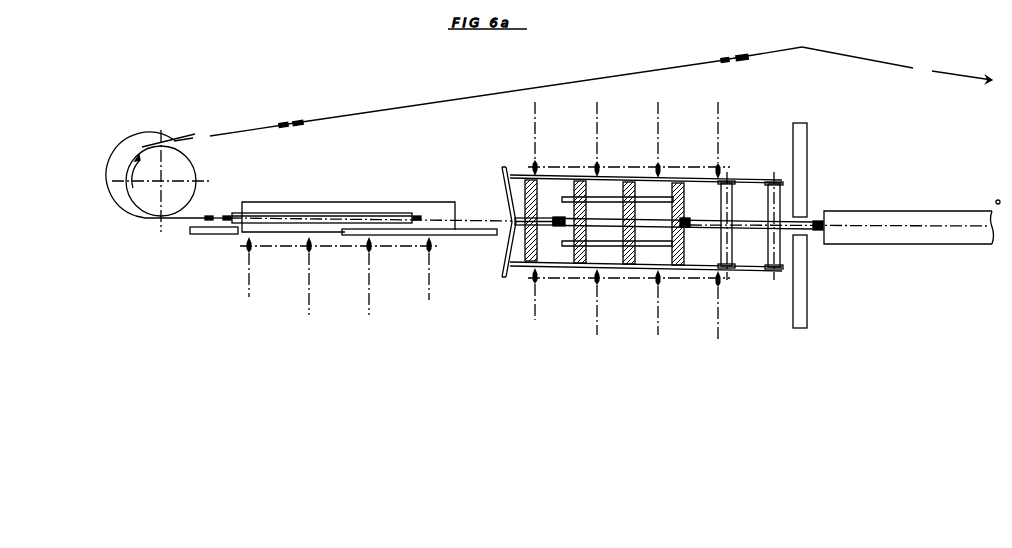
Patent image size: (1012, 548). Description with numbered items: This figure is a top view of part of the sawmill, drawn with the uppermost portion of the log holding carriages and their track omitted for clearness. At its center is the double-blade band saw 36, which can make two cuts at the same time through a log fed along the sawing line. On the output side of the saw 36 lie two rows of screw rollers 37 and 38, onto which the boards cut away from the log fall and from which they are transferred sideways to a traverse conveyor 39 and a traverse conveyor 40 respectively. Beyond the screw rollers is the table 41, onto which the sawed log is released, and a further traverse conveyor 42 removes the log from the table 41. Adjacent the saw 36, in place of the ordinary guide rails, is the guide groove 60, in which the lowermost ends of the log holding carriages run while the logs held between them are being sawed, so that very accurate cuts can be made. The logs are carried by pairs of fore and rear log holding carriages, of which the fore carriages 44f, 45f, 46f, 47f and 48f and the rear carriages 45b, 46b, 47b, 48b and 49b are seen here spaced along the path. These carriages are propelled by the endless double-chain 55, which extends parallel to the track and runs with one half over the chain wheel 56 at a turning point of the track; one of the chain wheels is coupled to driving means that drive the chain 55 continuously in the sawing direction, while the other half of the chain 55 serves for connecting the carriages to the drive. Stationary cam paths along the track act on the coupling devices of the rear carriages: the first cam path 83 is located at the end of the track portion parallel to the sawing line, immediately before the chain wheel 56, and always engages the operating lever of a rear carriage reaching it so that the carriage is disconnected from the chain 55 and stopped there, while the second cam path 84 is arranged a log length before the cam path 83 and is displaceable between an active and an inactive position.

The double-blade band saw 36 is at (803, 240).
The screw rollers 37 is at (587, 262).
The screw rollers 38 is at (587, 197).
The traverse conveyor 39 is at (718, 290).
The traverse conveyor 40 is at (720, 137).
The table 41 is at (441, 212).
The traverse conveyor 42 is at (430, 266).
The fore log holding carriage 44f is at (815, 222).
The rear log holding carriage 45b is at (685, 220).
The fore log holding carriage 45f is at (563, 217).
The rear log holding carriage 46b is at (417, 214).
The fore log holding carriage 46f is at (229, 214).
The rear log holding carriage 47b is at (210, 215).
The fore log holding carriage 47f is at (283, 129).
The rear log holding carriage 48b is at (299, 120).
The fore log holding carriage 48f is at (728, 63).
The rear log holding carriage 49b is at (745, 54).
The endless double-chain 55 is at (989, 78).
The chain wheel 56 is at (165, 212).
The guide groove 60 is at (760, 221).
The first cam path 83 is at (222, 232).
The second cam path 84 is at (490, 238).